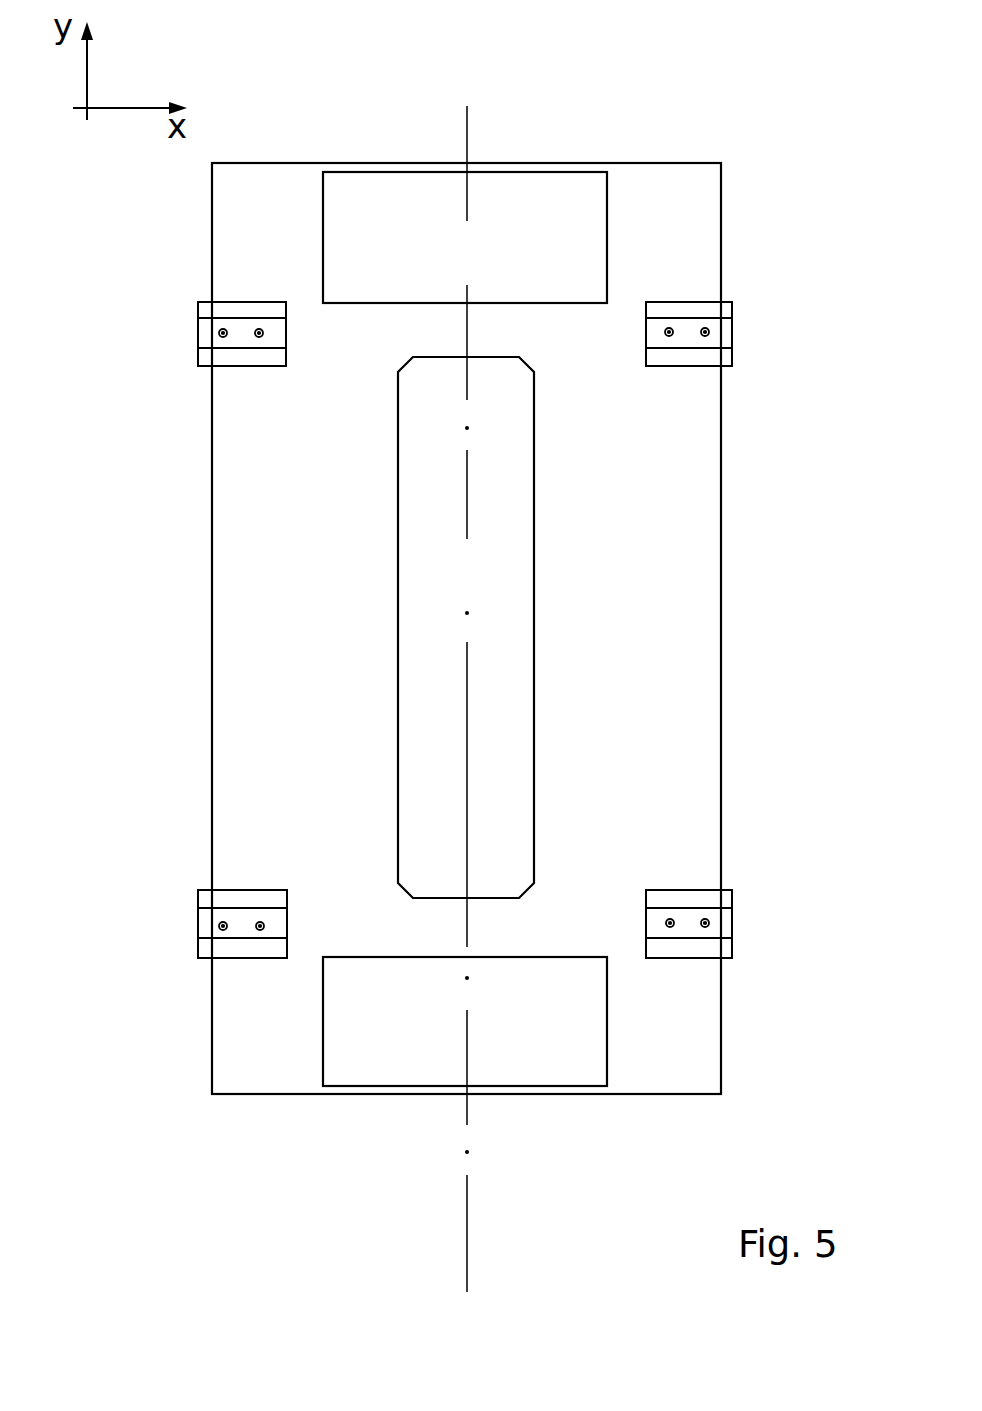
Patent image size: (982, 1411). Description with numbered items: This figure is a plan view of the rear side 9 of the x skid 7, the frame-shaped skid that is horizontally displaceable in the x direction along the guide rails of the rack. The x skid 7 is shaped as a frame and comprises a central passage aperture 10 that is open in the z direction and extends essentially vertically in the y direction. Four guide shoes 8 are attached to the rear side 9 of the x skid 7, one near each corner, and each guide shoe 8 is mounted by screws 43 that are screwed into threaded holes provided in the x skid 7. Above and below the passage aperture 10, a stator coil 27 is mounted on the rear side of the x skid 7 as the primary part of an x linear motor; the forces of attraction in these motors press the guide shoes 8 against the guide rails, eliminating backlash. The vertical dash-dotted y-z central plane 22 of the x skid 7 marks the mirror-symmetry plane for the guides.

The x skid 7 is at (723, 553).
The guide shoes 8 is at (213, 349).
The rear side 9 is at (607, 603).
The passage aperture 10 is at (457, 603).
The y-z central plane 22 is at (467, 667).
The stator coil 27 is at (556, 221).
The screws 43 is at (705, 332).